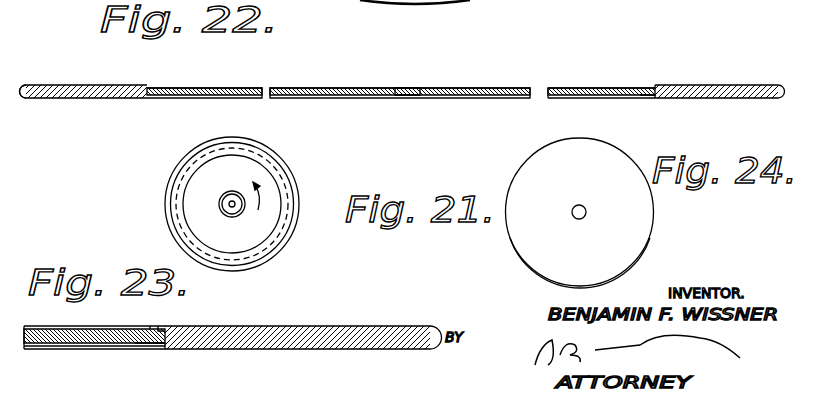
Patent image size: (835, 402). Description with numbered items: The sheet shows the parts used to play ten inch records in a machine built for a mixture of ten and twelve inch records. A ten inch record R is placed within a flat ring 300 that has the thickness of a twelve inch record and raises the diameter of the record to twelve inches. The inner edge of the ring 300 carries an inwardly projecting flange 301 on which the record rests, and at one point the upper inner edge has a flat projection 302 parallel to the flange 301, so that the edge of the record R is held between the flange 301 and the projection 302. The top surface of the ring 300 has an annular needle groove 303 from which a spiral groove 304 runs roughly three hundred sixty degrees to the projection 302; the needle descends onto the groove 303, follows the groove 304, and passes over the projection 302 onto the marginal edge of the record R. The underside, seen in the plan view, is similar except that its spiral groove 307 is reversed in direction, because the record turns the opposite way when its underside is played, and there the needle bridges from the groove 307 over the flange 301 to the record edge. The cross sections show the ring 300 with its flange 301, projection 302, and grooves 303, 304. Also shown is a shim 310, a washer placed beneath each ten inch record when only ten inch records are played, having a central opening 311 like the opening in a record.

In FIG. 22, the flat ring 300 is at (713, 85).
In FIG. 21, the flat ring 300 is at (302, 173).
In FIG. 23, the flat ring 300 is at (320, 319).
In FIG. 22, the inwardly projecting flange 301 is at (647, 100).
In FIG. 23, the inwardly projecting flange 301 is at (140, 349).
In FIG. 23, the flat projection 302 is at (163, 328).
In FIG. 22, the annular needle groove 303 is at (762, 92).
In FIG. 23, the annular needle groove 303 is at (387, 329).
In FIG. 22, the spiral groove 304 is at (105, 93).
In FIG. 21, the spiral groove 307 is at (183, 188).
In FIG. 23, the spiral groove 307 is at (387, 351).
In FIG. 24, the shim 310 is at (558, 145).
In FIG. 24, the central opening 311 is at (579, 205).
In FIG. 22, the record R is at (452, 88).
In FIG. 21, the record R is at (207, 173).
In FIG. 23, the record R is at (62, 347).